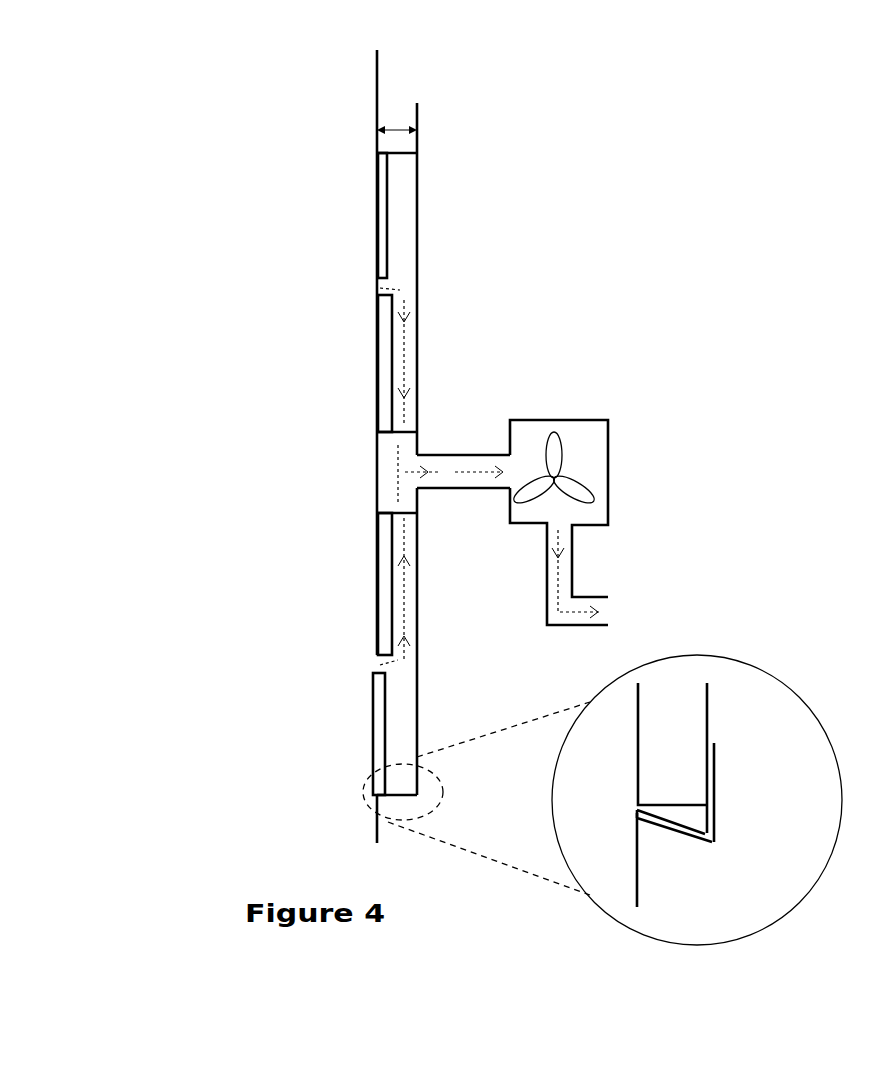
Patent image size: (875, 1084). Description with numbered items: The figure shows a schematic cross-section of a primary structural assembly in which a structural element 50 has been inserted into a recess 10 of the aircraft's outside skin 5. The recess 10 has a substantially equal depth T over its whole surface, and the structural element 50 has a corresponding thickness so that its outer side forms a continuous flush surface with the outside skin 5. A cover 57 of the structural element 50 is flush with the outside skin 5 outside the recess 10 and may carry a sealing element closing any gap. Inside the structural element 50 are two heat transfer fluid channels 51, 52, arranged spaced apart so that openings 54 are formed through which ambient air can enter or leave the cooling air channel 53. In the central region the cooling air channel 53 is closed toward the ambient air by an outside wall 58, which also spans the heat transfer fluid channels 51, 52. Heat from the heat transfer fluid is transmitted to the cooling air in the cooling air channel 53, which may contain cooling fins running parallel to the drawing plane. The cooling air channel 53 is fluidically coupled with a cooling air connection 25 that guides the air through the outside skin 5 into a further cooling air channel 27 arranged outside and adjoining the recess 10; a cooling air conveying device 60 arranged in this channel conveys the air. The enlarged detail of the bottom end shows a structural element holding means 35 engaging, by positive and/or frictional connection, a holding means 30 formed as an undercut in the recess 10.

The outside skin 5 is at (378, 78).
The recess 10 is at (427, 197).
The depth T is at (396, 118).
The cover 57 is at (380, 212).
The further heat transfer fluid channel 52 is at (383, 320).
The heat transfer fluid channel 51 is at (380, 578).
The openings 54 is at (375, 288).
The outside wall 58 is at (372, 493).
The structural element 50 is at (360, 418).
The cooling air channel 53 is at (385, 468).
The cooling air connection 25 is at (449, 470).
The cooling air channel 27 is at (498, 455).
The cooling air conveying device 60 is at (554, 478).
The structural element holding means 35 is at (677, 812).
The holding means 30 is at (719, 838).